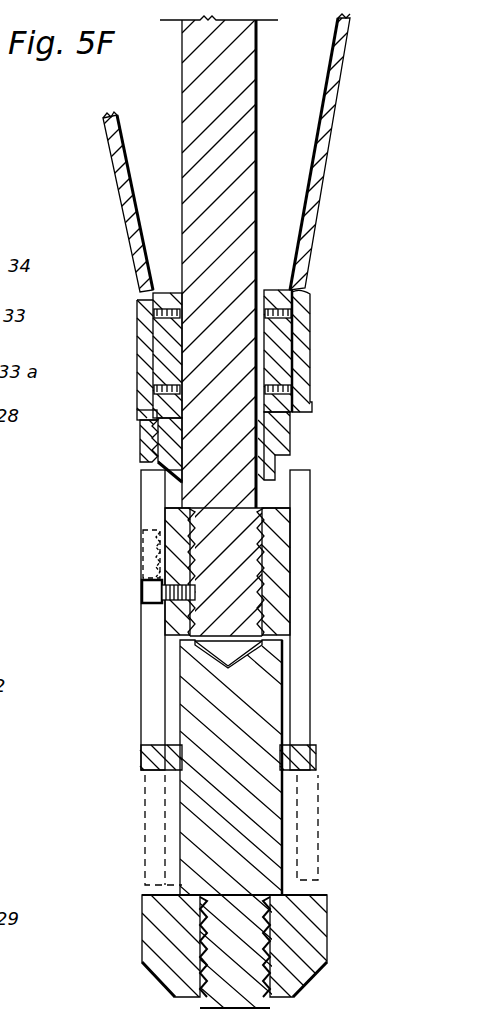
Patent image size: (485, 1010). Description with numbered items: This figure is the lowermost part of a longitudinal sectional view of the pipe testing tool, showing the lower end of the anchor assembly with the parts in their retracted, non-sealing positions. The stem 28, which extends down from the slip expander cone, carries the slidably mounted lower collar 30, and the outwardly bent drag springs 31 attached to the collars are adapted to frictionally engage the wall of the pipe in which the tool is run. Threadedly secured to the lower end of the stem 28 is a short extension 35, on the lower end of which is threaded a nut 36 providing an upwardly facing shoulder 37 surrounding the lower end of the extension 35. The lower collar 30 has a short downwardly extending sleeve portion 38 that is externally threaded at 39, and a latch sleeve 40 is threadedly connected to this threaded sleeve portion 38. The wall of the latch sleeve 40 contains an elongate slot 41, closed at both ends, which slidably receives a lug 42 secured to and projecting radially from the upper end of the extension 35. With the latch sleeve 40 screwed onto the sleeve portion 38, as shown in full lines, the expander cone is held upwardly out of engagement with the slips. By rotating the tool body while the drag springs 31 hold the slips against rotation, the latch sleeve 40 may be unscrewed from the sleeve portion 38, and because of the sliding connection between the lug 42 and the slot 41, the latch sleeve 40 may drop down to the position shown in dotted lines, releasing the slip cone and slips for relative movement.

The stem 28 is at (250, 490).
The lower collar 30 is at (287, 357).
The drag springs 31 is at (127, 196).
The extension 35 is at (295, 525).
The nut 36 is at (152, 930).
The shoulder 37 is at (152, 895).
The sleeve portion 38 is at (160, 468).
The external threads 39 is at (150, 440).
The latch sleeve 40 is at (155, 683).
The slot 41 is at (140, 515).
The lug 42 is at (142, 592).